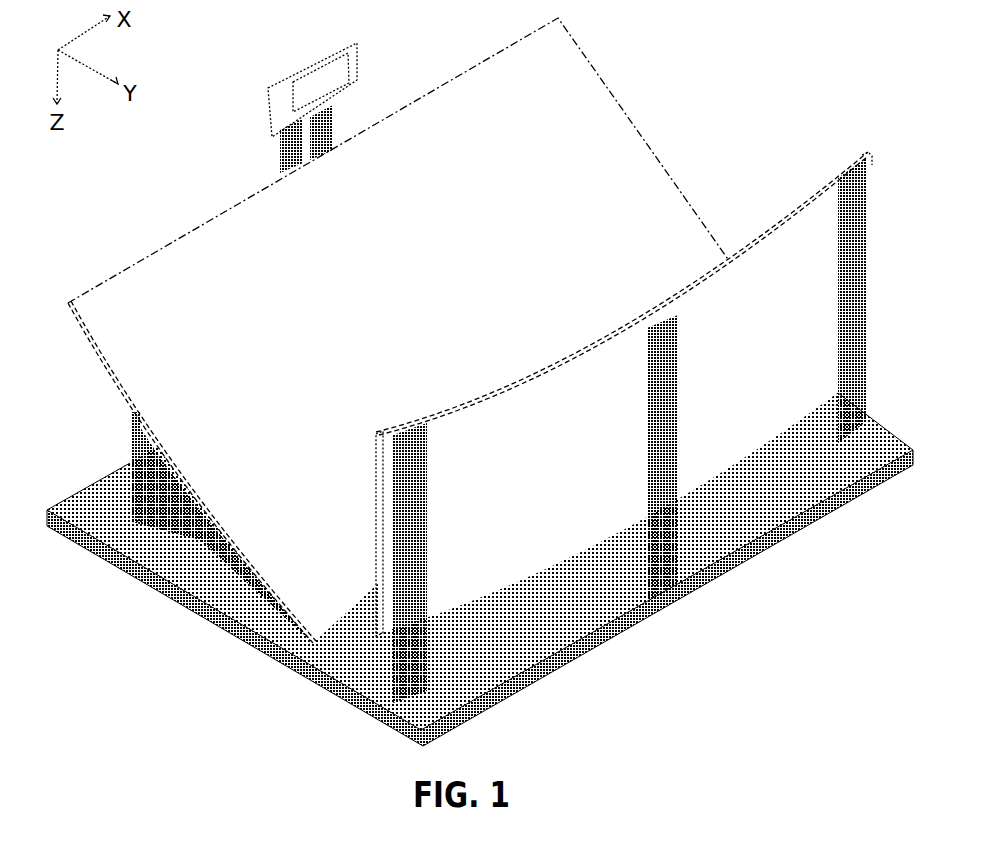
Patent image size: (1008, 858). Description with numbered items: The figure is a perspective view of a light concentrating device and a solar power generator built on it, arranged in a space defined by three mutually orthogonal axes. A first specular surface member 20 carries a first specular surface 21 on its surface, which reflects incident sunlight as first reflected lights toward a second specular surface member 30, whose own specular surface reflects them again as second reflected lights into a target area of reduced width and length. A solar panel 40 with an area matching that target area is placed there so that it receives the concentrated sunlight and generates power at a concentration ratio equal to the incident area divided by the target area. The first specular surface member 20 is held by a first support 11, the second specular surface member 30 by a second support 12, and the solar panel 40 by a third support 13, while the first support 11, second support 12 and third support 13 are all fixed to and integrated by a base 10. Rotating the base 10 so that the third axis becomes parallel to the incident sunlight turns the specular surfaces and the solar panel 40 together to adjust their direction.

The base 10 is at (65, 500).
The first support 11 is at (130, 438).
The second support 12 is at (866, 285).
The third support 13 is at (280, 148).
The first specular surface member 20 is at (368, 330).
The first specular surface 21 is at (320, 338).
The second specular surface member 30 is at (807, 200).
The solar panel 40 is at (333, 47).